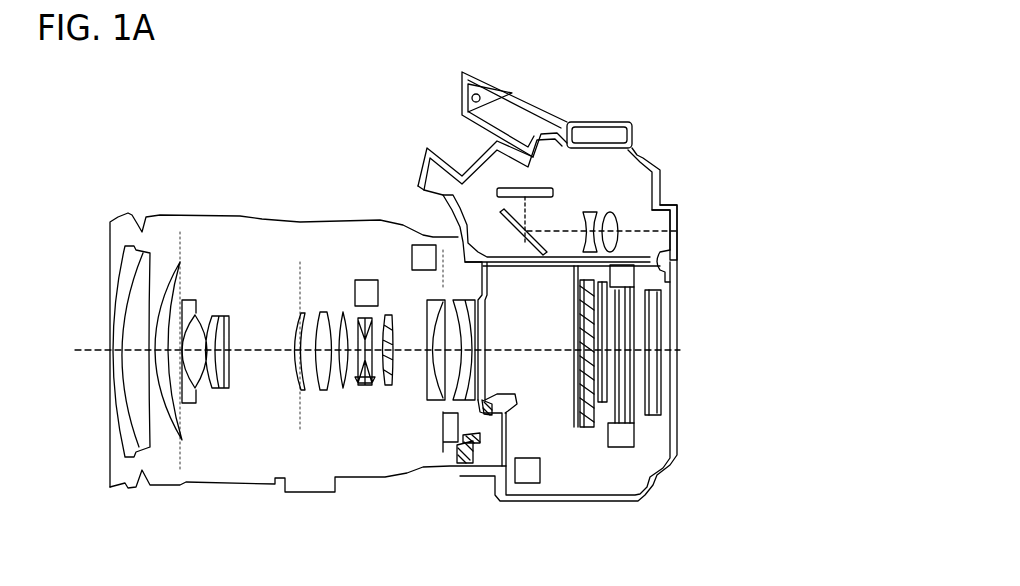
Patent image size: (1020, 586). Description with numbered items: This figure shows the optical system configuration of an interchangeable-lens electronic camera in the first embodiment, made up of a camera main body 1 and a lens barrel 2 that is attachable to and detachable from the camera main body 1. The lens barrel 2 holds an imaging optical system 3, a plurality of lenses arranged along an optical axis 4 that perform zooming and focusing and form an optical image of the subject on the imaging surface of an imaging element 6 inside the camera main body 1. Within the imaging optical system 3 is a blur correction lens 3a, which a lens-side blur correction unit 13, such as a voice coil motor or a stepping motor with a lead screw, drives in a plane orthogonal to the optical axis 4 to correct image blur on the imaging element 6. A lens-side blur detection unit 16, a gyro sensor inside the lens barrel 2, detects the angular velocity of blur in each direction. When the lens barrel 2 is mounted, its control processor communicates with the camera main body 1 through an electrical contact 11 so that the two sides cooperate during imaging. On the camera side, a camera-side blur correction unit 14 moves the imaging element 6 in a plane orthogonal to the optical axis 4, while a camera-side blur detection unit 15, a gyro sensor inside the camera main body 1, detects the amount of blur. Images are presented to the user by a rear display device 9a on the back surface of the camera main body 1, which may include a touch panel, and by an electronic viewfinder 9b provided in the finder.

The camera main body 1 is at (652, 124).
The lens barrel 2 is at (308, 340).
The imaging optical system 3 is at (243, 462).
The blur correction lens 3a is at (361, 410).
The optical axis 4 is at (78, 355).
The imaging element 6 is at (620, 372).
The rear display device 9a is at (665, 382).
The electronic viewfinder 9b is at (628, 218).
The electrical contact 11 is at (455, 455).
The lens-side blur correction unit 13 is at (362, 280).
The camera-side blur correction unit 14 is at (622, 442).
The camera-side blur detection unit 15 is at (530, 477).
The lens-side blur detection unit 16 is at (418, 245).